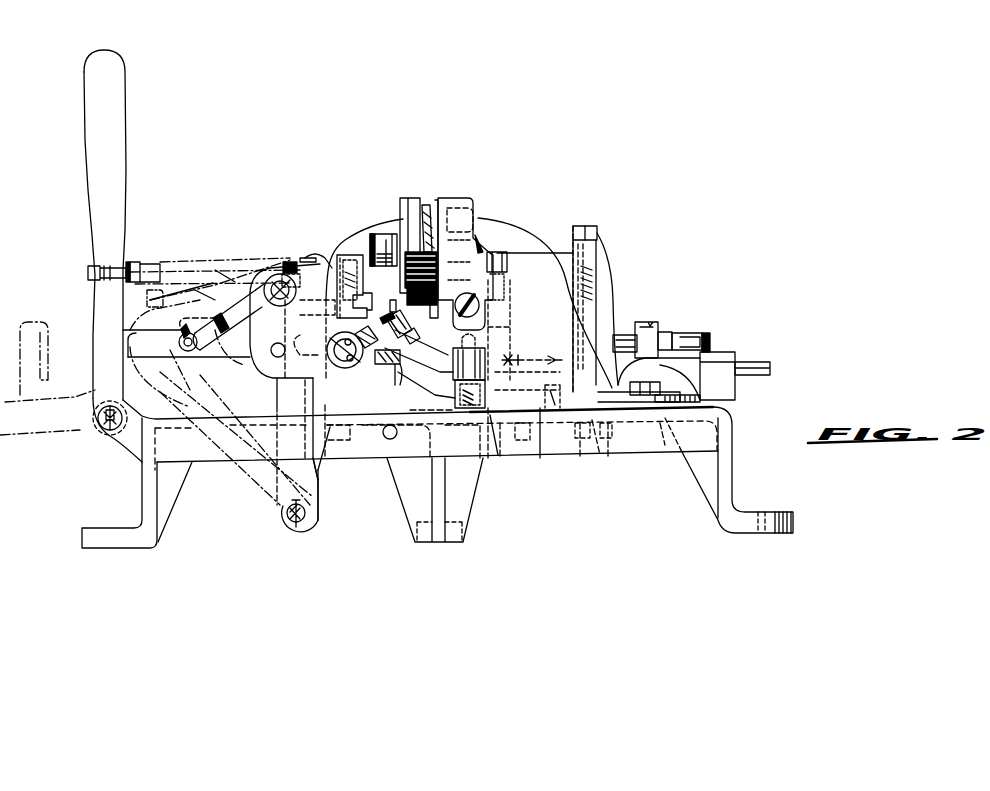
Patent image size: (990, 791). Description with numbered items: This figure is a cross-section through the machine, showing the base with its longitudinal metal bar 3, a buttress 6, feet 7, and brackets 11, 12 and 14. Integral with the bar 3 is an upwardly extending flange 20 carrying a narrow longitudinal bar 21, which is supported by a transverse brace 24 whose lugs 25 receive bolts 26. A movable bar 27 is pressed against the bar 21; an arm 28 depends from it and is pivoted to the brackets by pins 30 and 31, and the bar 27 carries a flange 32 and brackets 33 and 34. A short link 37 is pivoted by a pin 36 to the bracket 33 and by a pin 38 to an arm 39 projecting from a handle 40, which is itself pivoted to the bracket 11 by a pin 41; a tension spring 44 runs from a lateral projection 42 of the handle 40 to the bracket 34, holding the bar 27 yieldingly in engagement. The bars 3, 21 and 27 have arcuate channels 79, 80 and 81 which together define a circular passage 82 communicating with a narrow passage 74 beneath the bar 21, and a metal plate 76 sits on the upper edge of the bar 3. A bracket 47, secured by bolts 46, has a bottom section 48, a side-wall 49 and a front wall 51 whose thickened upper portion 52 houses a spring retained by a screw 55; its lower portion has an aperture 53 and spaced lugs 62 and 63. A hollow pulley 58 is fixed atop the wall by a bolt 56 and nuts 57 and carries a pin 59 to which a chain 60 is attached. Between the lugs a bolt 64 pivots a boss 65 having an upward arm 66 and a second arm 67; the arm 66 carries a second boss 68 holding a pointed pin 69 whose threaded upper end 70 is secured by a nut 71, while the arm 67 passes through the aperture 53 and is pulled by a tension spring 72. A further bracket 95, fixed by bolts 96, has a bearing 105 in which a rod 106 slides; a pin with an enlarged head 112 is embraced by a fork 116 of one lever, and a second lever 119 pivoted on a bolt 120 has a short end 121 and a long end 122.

The longitudinal metal bar 3 is at (400, 372).
The buttress 6 is at (612, 302).
The feet 7 is at (142, 487).
The bracket 11 is at (113, 448).
The bracket 12 is at (322, 517).
The bracket 14 is at (322, 483).
The flange 20 is at (360, 412).
The narrow longitudinal bar 21 is at (369, 291).
The transverse brace 24 is at (545, 230).
The lug 25 is at (345, 256).
The bolt 26 is at (350, 255).
The movable bar 27 is at (200, 270).
The arm 28 is at (280, 402).
The pin 30 is at (288, 518).
The pin 31 is at (287, 513).
The flange 32 is at (145, 378).
The bracket 33 is at (277, 268).
The bracket 34 is at (160, 262).
The pin 36 is at (268, 262).
The short link 37 is at (241, 285).
The pin 38 is at (213, 283).
The arm 39 is at (175, 283).
The handle 40 is at (119, 163).
The pin 41 is at (98, 424).
The lateral projection 42 is at (88, 272).
The tension spring 44 is at (148, 262).
The bolt 46 is at (603, 385).
The bracket 47 is at (583, 318).
The bottom section 48 is at (598, 452).
The side-wall 49 is at (540, 430).
The front wall 51 is at (496, 432).
The upper portion 52 is at (460, 200).
The aperture 53 is at (508, 347).
The screw 55 is at (480, 312).
The bolt 56 is at (377, 245).
The nut 57 is at (385, 240).
The hollow pulley 58 is at (412, 210).
The pin 59 is at (441, 308).
The chain 60 is at (427, 210).
The lug 62 is at (483, 330).
The lug 63 is at (480, 392).
The bolt 64 is at (492, 338).
The boss 65 is at (453, 347).
The arm 66 is at (437, 357).
The arm 67 is at (515, 358).
The second boss 68 is at (392, 315).
The pointed pin 69 is at (383, 364).
The threaded upper end 70 is at (418, 330).
The nut 71 is at (380, 318).
The tension spring 72 is at (547, 356).
The narrow passage 74 is at (352, 383).
The metal plate 76 is at (395, 385).
The arcuate channel 79 is at (359, 358).
The arcuate channel 80 is at (357, 337).
The arcuate channel 81 is at (345, 350).
The passage 82 is at (303, 328).
The bracket 95 is at (690, 388).
The bolt 96 is at (648, 385).
The bearing 105 is at (715, 360).
The rod 106 is at (760, 364).
The enlarged head 112 is at (693, 335).
The fork 116 is at (700, 340).
The second lever 119 is at (665, 334).
The bolt 120 is at (652, 322).
The end 121 is at (690, 333).
The end 122 is at (620, 335).